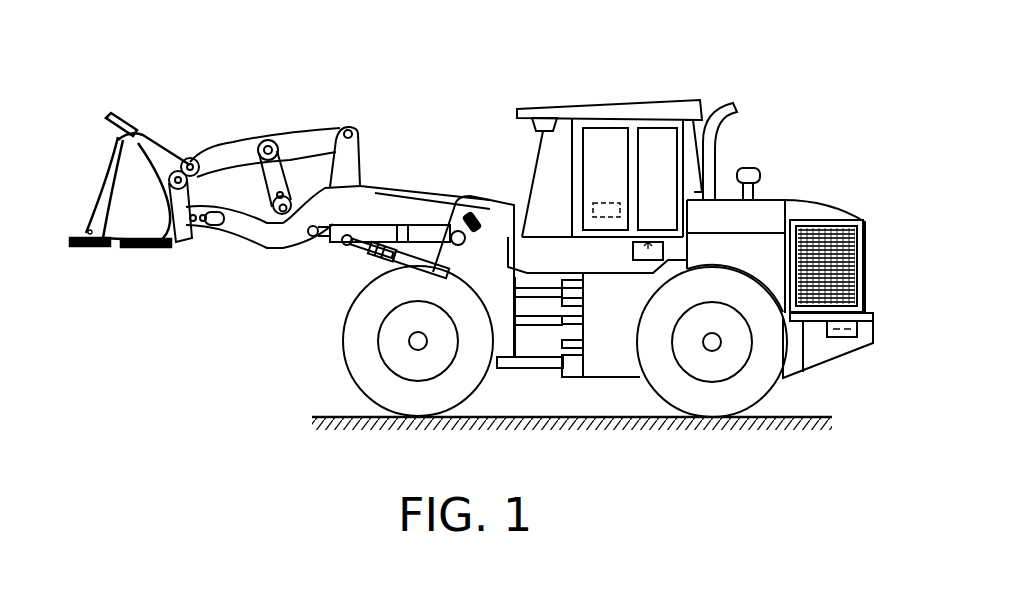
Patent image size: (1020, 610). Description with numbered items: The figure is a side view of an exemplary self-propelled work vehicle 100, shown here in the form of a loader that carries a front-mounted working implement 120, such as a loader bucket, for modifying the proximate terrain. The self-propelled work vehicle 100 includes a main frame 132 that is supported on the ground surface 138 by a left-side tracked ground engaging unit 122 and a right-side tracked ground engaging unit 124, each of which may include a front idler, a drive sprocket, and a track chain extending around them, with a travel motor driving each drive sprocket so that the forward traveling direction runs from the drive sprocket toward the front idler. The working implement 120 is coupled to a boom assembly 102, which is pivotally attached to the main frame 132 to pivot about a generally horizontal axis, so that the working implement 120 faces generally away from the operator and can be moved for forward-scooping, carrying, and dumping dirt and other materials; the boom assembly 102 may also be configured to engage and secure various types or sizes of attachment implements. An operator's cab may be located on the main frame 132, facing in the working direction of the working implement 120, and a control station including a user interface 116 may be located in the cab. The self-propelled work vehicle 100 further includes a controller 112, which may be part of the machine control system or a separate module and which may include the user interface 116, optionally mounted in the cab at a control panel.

The self-propelled work vehicle 100 is at (439, 68).
The boom assembly 102 is at (255, 262).
The controller 112 is at (643, 243).
The user interface 116 is at (597, 203).
The working implement 120 is at (118, 232).
The left-side tracked ground engaging unit 122 is at (551, 374).
The right-side tracked ground engaging unit 124 is at (363, 359).
The main frame 132 is at (610, 355).
The ground surface 138 is at (827, 416).